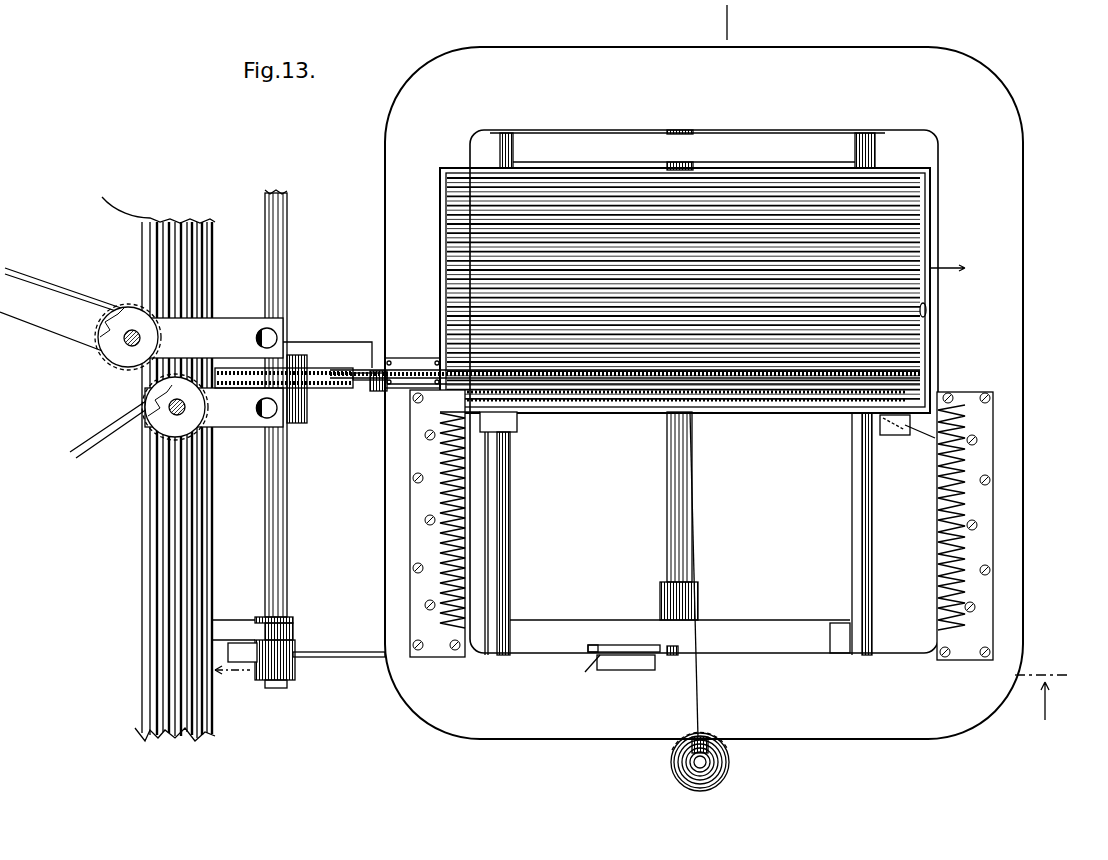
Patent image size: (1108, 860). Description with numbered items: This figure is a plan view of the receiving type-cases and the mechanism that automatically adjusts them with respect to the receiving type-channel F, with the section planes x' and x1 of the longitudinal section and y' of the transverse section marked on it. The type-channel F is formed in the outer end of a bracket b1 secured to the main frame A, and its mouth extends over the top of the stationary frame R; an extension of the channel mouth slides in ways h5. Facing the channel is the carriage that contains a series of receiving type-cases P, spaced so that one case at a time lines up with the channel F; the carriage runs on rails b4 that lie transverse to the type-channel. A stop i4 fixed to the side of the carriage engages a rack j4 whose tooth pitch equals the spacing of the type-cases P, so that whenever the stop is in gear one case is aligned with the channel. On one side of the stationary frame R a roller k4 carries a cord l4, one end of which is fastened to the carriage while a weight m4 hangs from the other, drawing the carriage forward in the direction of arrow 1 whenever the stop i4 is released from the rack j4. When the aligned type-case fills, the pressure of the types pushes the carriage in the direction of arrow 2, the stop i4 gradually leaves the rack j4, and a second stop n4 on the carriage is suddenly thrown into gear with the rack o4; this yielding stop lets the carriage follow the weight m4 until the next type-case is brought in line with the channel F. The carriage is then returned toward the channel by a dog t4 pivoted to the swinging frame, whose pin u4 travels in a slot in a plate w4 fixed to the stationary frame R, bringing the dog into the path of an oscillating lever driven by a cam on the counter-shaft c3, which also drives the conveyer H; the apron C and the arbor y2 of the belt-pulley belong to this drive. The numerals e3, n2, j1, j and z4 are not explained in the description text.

The stationary frame R is at (704, 393).
The receiving type-cases P is at (685, 290).
The apron C is at (158, 469).
The counter-shaft c3 is at (298, 439).
The block e3 is at (242, 652).
The section plane x1 x1 is at (224, 665).
The main frame A is at (199, 364).
The pivot n2 is at (128, 337).
The arbor of pulley E' y2 is at (175, 407).
The rod j1 is at (76, 310).
The rod j is at (113, 427).
The bracket b1 is at (327, 372).
The conveyer H is at (284, 369).
The receiving type-channel F is at (396, 369).
The ways h5 is at (625, 374).
The arrow 2 is at (954, 268).
The section plane y1 y1 y' is at (732, 406).
The section plane x1 x1 x' is at (1051, 692).
The rack j4 is at (437, 523).
The rack o4 is at (965, 526).
The stop i4 is at (478, 422).
The guide bar z4 is at (503, 543).
The rails b4 is at (851, 534).
The stop n4 is at (907, 435).
The arrow 1 is at (700, 473).
The cord l4 is at (700, 574).
The roller k4 is at (705, 734).
The weight m4 is at (692, 761).
The dog t4 is at (633, 645).
The plate w4 is at (626, 663).
The pin u4 is at (584, 663).